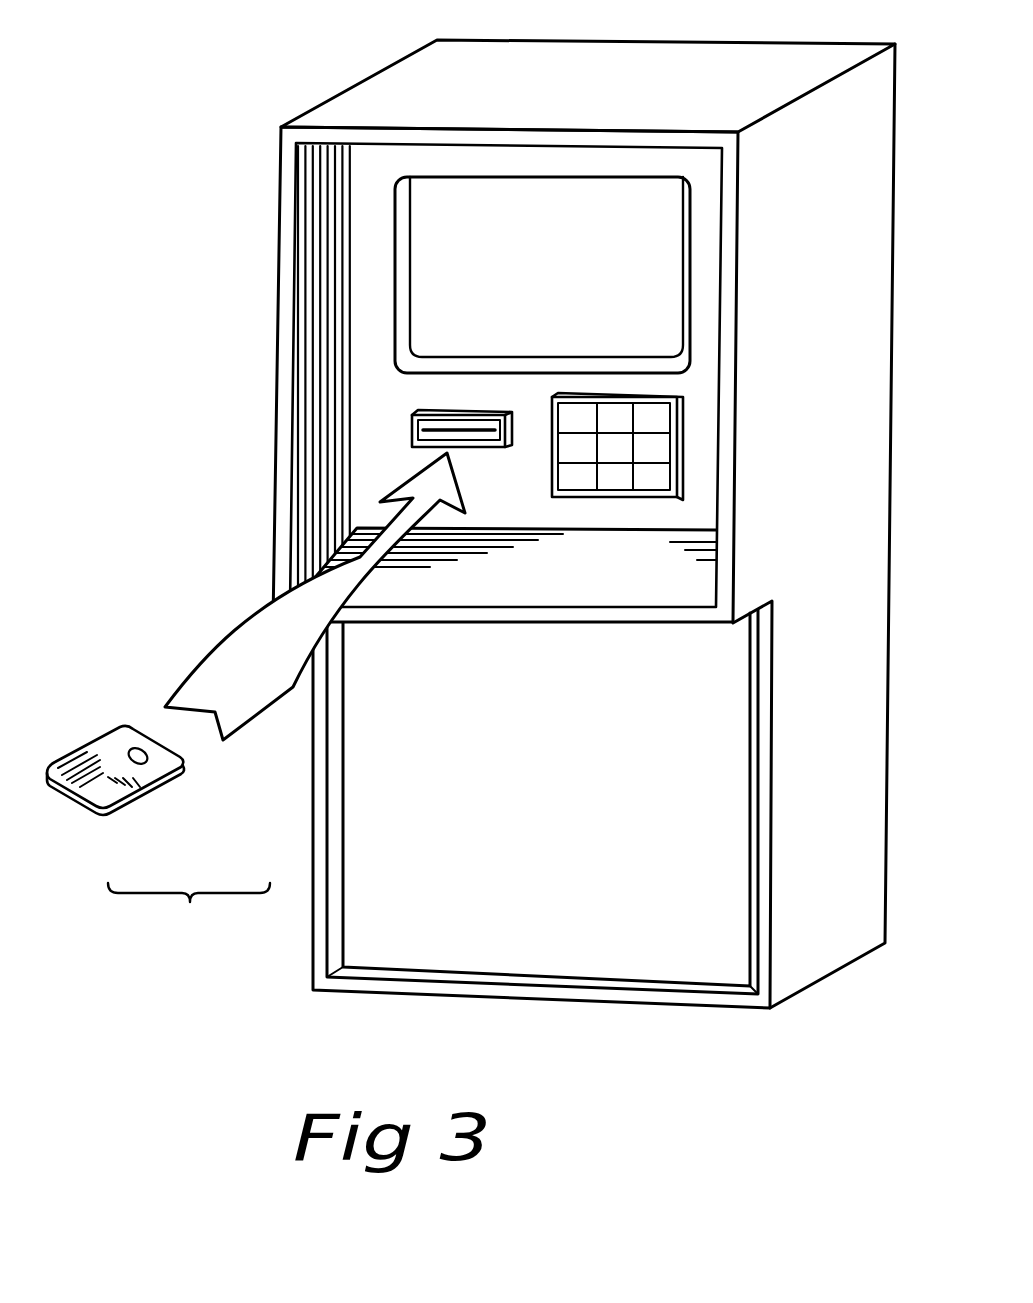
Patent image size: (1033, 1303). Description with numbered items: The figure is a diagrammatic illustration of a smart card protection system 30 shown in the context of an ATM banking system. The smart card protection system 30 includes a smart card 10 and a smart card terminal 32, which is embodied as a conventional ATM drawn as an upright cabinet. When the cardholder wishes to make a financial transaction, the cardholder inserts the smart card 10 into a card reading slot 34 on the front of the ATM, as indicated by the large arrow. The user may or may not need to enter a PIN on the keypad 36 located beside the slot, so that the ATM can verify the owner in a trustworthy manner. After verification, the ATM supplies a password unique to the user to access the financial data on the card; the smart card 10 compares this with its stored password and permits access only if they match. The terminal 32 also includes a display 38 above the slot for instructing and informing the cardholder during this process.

The smart card protection system 30 is at (479, 557).
The smart card terminal 32 is at (813, 929).
The card reading slot 34 is at (423, 447).
The keypad 36 is at (657, 475).
The display 38 is at (642, 312).
The smart card 10 is at (105, 750).